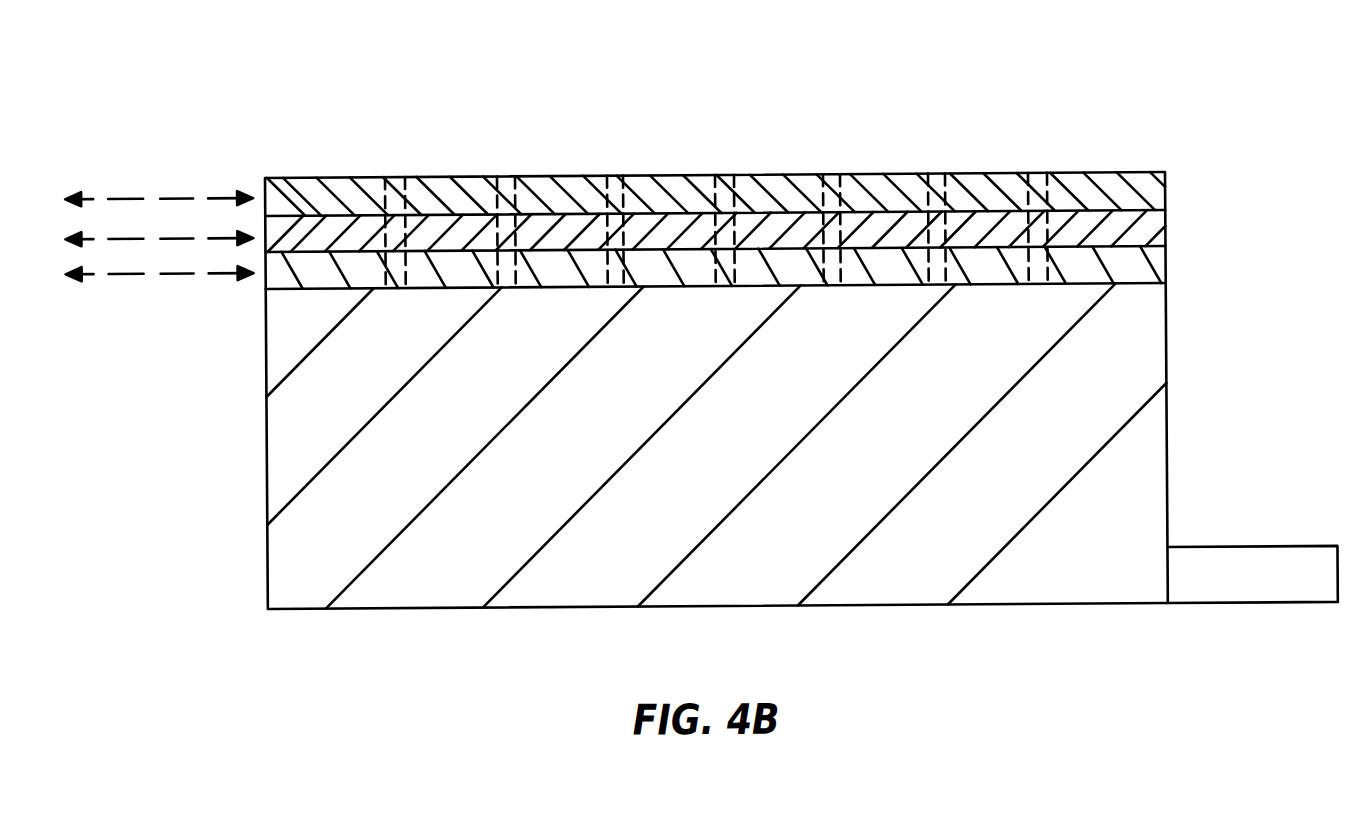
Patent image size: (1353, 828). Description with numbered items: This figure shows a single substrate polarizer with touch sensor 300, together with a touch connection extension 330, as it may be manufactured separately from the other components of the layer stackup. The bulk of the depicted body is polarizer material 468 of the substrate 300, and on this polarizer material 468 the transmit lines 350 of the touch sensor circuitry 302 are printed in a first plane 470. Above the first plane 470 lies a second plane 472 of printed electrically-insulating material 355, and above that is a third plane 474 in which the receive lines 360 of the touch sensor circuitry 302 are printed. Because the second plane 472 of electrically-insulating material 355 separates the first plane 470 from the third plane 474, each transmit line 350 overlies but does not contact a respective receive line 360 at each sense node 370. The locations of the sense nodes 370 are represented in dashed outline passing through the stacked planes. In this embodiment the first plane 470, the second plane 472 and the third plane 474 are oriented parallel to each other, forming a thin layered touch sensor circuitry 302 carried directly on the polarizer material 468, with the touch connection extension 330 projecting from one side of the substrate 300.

The single substrate polarizer with touch sensor 300 is at (917, 57).
The touch sensor circuitry 302 is at (1178, 178).
The touch connection extension 330 is at (1271, 553).
The transmit lines 350 is at (542, 264).
The electrically-insulating material 355 is at (425, 225).
The receive lines 360 is at (353, 202).
The sense node 370 is at (1041, 180).
The polarizer material 468 is at (1052, 572).
The first plane 470 is at (124, 274).
The second plane 472 is at (182, 239).
The third plane 474 is at (127, 198).